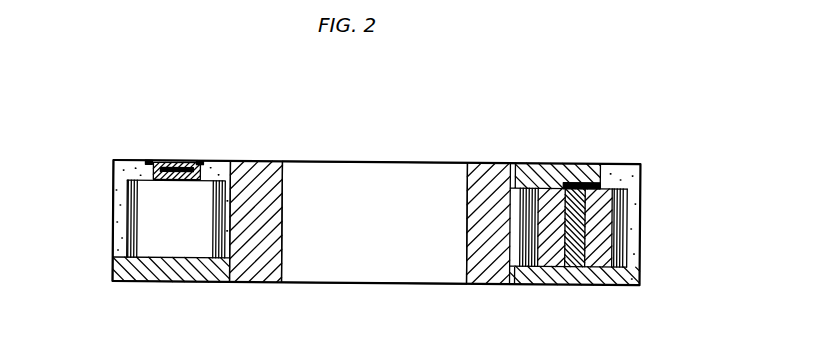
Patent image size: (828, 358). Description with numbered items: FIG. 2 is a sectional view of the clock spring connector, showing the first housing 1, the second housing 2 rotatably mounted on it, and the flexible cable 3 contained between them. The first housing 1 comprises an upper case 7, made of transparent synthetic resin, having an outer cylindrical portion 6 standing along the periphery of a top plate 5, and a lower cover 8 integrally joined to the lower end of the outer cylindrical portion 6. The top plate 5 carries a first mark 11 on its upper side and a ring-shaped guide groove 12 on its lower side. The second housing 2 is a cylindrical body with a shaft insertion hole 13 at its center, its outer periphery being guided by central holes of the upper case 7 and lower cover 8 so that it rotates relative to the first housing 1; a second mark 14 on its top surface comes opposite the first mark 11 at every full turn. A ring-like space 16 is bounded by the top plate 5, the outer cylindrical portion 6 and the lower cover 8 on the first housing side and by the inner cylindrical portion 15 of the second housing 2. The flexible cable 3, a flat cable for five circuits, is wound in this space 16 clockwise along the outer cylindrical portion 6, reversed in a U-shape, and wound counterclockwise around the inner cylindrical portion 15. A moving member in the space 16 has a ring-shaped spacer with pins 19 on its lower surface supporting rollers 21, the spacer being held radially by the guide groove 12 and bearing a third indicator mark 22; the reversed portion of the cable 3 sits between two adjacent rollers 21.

The first housing 1 is at (58, 193).
The second housing 2 is at (476, 151).
The flexible cable 3 is at (207, 230).
The top plate 5 is at (528, 163).
The outer cylindrical portion 6 is at (635, 200).
The upper case 7 is at (112, 212).
The lower cover 8 is at (112, 270).
The first mark 11 is at (152, 159).
The guide groove 12 is at (612, 163).
The shaft insertion hole 13 is at (360, 268).
The second mark 14 is at (263, 159).
The inner cylindrical portion 15 is at (252, 263).
The space 16 is at (158, 243).
The pins 19 is at (565, 268).
The rollers 21 is at (635, 242).
The third indicator mark 22 is at (175, 159).